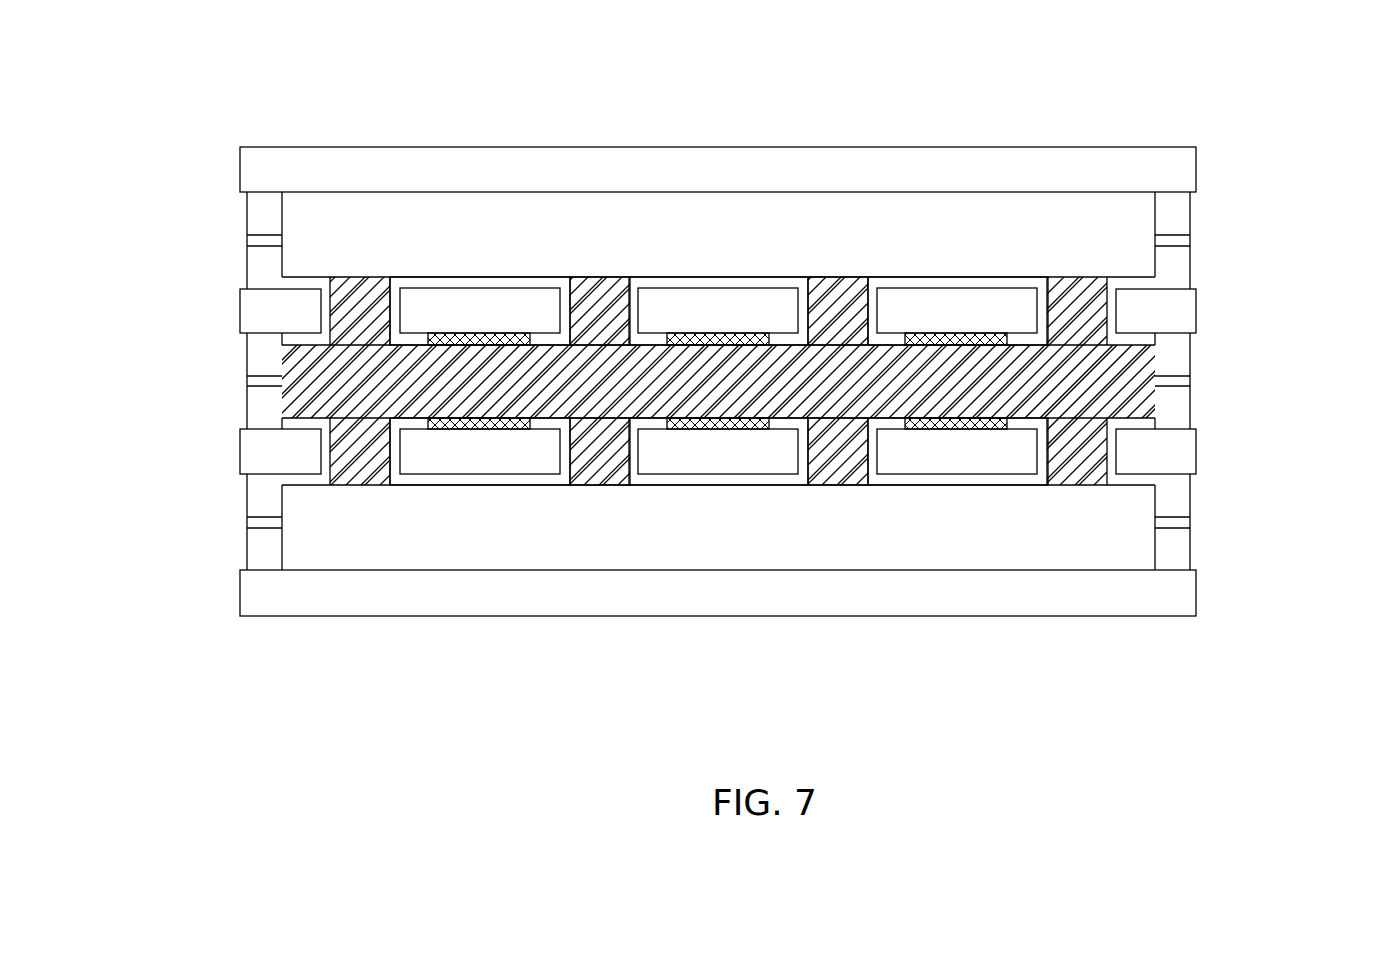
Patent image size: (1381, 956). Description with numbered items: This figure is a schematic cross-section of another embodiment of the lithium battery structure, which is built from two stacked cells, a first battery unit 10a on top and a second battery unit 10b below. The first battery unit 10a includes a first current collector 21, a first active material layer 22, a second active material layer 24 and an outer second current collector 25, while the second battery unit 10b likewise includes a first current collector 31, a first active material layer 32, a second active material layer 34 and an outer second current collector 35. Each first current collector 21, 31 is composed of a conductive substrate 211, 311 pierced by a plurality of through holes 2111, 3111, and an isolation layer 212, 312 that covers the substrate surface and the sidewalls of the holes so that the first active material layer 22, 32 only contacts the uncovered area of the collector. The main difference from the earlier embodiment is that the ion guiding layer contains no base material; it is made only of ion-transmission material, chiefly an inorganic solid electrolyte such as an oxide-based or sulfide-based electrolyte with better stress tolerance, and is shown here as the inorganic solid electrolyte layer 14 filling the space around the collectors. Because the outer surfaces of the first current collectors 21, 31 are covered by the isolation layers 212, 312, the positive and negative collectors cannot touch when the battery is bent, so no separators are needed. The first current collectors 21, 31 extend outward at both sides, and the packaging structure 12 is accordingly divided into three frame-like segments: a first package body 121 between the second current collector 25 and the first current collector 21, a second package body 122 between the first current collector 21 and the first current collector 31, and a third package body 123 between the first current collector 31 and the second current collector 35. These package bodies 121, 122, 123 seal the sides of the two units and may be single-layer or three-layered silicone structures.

The first battery unit 10a is at (1301, 152).
The second battery unit 10b is at (1301, 395).
The packaging structure 12 is at (621, 381).
The first package body 121 is at (247, 220).
The second package body 122 is at (247, 360).
The third package body 123 is at (662, 522).
The inorganic solid electrolyte layer 14 is at (355, 485).
The first current collector 21 is at (1182, 307).
The conductive substrate 211 is at (728, 300).
The through holes 2111 is at (828, 285).
The isolation layer 212 is at (1007, 347).
The first active material layer 22 is at (1045, 328).
The second active material layer 24 is at (1140, 224).
The second current collector 25 is at (1198, 167).
The first current collector 31 is at (1182, 455).
The conductive substrate 311 is at (725, 485).
The through holes 3111 is at (828, 485).
The isolation layer 312 is at (1000, 418).
The first active material layer 32 is at (1045, 433).
The second active material layer 34 is at (1140, 540).
The second current collector 35 is at (1198, 608).